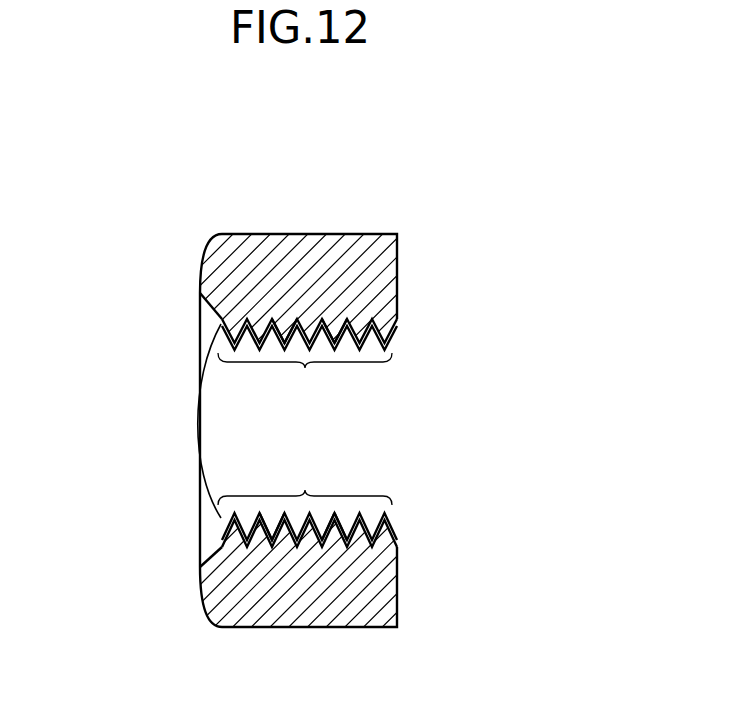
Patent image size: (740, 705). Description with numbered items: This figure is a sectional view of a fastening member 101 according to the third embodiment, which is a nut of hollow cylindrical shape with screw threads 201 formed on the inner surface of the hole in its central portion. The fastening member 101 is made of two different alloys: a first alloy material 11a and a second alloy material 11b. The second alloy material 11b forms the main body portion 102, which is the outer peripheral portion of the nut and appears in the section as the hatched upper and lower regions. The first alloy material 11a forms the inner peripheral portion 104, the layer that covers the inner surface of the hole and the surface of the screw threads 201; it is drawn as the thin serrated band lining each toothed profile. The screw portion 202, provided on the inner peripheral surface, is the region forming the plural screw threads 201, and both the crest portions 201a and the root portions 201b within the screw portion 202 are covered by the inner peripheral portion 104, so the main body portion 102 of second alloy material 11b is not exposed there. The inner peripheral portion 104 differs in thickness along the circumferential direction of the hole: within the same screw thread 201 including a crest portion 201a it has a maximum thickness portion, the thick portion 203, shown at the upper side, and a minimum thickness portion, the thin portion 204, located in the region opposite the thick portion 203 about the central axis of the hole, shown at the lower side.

The fastening member 101 is at (470, 152).
The main body portion 102 is at (370, 435).
The second alloy material 11b is at (287, 262).
The inner peripheral portion 104 is at (387, 435).
The first alloy material 11a is at (400, 333).
The screw thread 201 is at (276, 351).
The crest portion 201a is at (337, 340).
The root portion 201b is at (348, 335).
The screw portion 202 is at (305, 429).
The thick portion 203 is at (309, 338).
The thin portion 204 is at (309, 525).